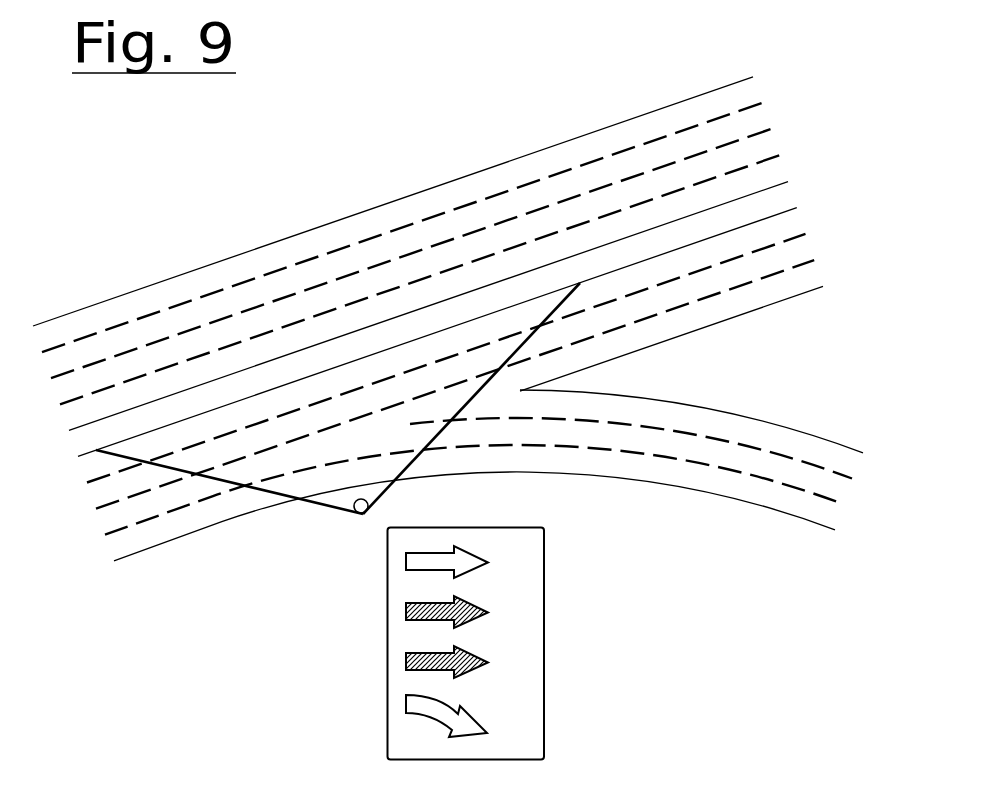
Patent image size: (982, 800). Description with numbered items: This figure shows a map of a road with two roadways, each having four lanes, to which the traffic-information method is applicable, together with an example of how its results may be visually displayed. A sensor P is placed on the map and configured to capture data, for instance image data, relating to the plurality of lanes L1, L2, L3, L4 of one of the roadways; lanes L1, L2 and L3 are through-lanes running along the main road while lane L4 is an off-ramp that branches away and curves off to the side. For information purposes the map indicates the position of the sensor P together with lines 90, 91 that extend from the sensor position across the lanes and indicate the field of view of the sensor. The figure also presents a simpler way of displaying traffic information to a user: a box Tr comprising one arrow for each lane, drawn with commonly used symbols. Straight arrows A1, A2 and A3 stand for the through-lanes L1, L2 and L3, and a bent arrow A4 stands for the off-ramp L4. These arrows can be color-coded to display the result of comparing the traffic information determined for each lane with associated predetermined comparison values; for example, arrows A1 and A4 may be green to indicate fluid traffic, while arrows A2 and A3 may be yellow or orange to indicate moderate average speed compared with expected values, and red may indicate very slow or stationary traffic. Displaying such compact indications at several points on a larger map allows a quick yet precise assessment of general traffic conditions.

The first travel trajectory section of the vehicle 90 is at (317, 504).
The field-of-view line 91 is at (385, 489).
The sensor P is at (357, 522).
The lane L1 is at (449, 326).
The lane L2 is at (458, 353).
The lane L3 is at (468, 380).
The off-ramp lane L4 is at (474, 515).
The box Tr is at (485, 634).
The straight arrow A1 is at (462, 557).
The straight arrow A2 is at (462, 608).
The straight arrow A3 is at (462, 658).
The bent arrow A4 is at (462, 714).